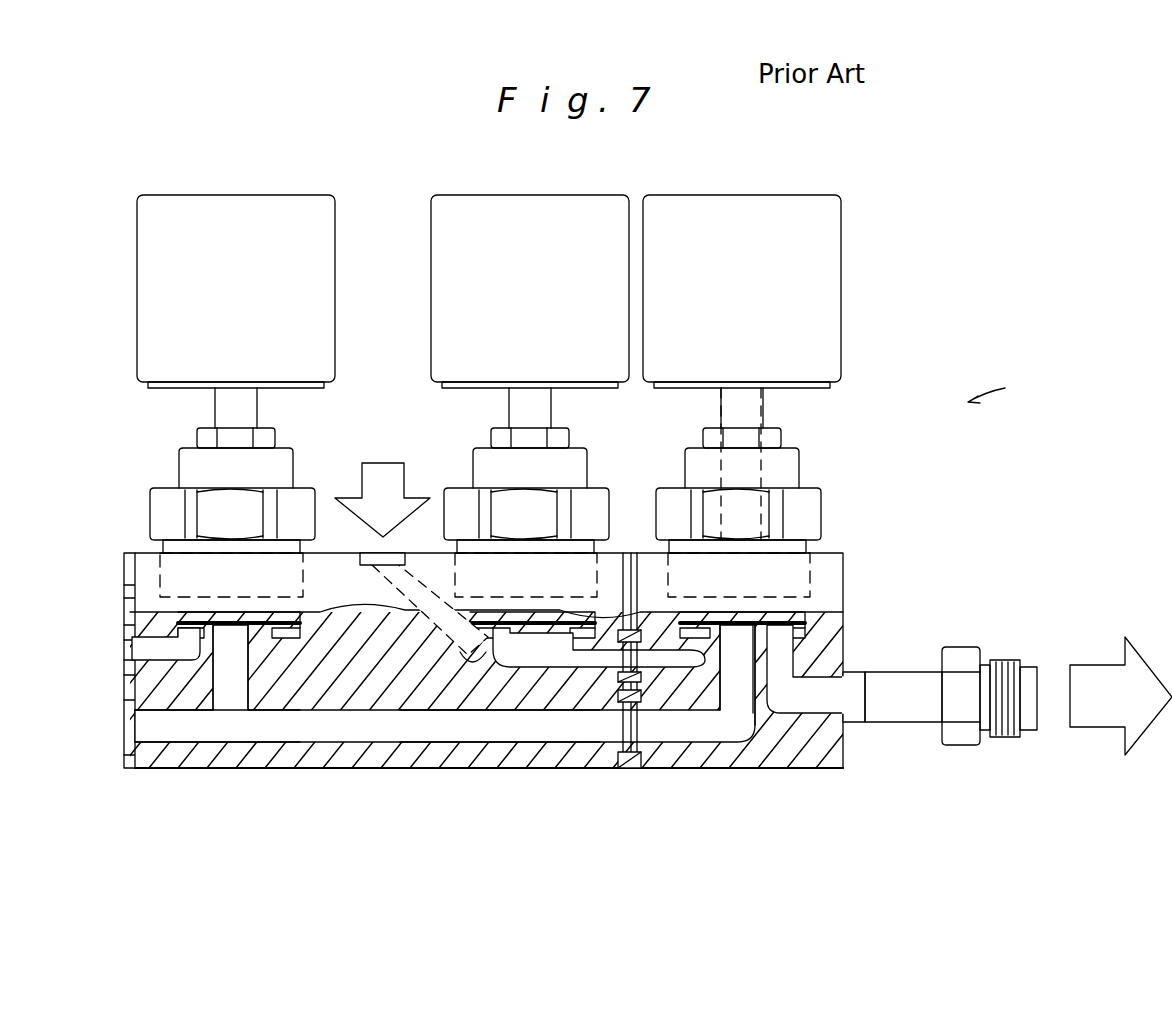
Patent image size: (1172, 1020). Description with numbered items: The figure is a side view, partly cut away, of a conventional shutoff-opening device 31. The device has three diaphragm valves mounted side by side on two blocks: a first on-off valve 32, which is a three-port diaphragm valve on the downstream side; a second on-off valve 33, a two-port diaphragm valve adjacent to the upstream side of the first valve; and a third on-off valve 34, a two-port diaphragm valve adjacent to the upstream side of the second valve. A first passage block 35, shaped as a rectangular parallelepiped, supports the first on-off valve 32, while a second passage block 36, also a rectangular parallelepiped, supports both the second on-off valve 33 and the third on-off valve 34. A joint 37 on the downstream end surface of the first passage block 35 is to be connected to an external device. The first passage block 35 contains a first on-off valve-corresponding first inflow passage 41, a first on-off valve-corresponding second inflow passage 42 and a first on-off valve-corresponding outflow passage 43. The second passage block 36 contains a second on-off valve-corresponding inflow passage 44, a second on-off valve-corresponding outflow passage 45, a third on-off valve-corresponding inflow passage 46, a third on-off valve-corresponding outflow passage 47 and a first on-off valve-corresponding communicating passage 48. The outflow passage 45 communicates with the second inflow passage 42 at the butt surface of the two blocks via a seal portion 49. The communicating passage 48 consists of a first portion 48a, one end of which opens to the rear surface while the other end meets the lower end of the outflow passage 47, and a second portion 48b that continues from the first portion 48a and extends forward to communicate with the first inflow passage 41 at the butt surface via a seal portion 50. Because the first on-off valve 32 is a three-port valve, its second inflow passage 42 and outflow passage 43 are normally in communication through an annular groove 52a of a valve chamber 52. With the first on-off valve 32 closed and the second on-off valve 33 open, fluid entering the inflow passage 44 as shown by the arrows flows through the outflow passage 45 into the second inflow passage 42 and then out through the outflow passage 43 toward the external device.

The shutoff-opening device 31 is at (1008, 387).
The first on-off valve 32 is at (796, 198).
The second on-off valve 33 is at (566, 197).
The third on-off valve 34 is at (286, 196).
The first passage block 35 is at (780, 768).
The second passage block 36 is at (355, 768).
The joint 37 is at (958, 648).
The first on-off valve-corresponding first inflow passage 41 is at (667, 733).
The first on-off valve-corresponding second inflow passage 42 is at (690, 703).
The first on-off valve-corresponding outflow passage 43 is at (812, 700).
The second on-off valve-corresponding inflow passage 44 is at (452, 655).
The second on-off valve-corresponding outflow passage 45 is at (556, 660).
The third on-off valve-corresponding inflow passage 46 is at (160, 648).
The third on-off valve-corresponding outflow passage 47 is at (233, 668).
The first on-off valve-corresponding communicating passage 48 is at (414, 727).
The first portion 48a is at (193, 725).
The second portion 48b is at (500, 728).
The seal portion 49 is at (618, 740).
The seal portion 50 is at (627, 768).
The valve chamber 52 is at (770, 597).
The annular groove 52a is at (830, 628).